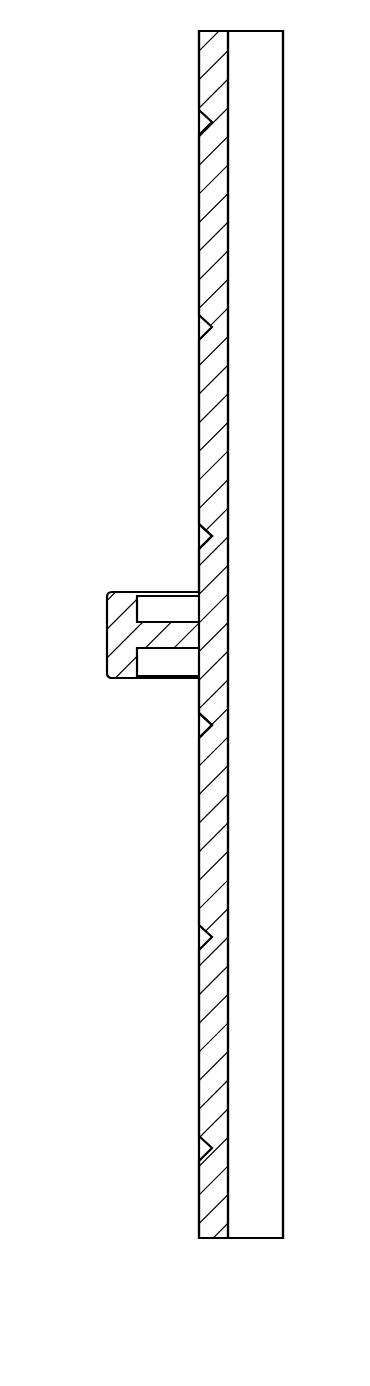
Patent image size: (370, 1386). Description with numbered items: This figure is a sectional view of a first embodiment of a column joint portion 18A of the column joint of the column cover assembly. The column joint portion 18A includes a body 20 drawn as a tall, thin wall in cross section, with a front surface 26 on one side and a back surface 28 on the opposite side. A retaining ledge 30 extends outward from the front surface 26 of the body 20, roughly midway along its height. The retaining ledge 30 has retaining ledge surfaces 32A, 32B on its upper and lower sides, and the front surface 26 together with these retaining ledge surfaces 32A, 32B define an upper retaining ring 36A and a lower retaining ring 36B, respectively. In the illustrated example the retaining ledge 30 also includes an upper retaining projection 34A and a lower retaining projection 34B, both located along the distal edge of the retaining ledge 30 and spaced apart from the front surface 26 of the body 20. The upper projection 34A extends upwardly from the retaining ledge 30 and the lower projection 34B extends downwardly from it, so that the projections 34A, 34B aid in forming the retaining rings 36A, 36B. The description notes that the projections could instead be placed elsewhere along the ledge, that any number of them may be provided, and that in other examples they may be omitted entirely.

The column joint portion 18A is at (129, 156).
The body 20 is at (270, 500).
The front surface 26 is at (197, 1087).
The back surface 28 is at (270, 247).
The retaining ledge 30 is at (108, 630).
The retaining ledge surface 32A is at (161, 616).
The retaining ledge surface 32B is at (158, 653).
The upper retaining projection 34A is at (113, 594).
The lower retaining projection 34B is at (113, 677).
The upper retaining ring 36A is at (185, 569).
The lower retaining ring 36B is at (182, 696).